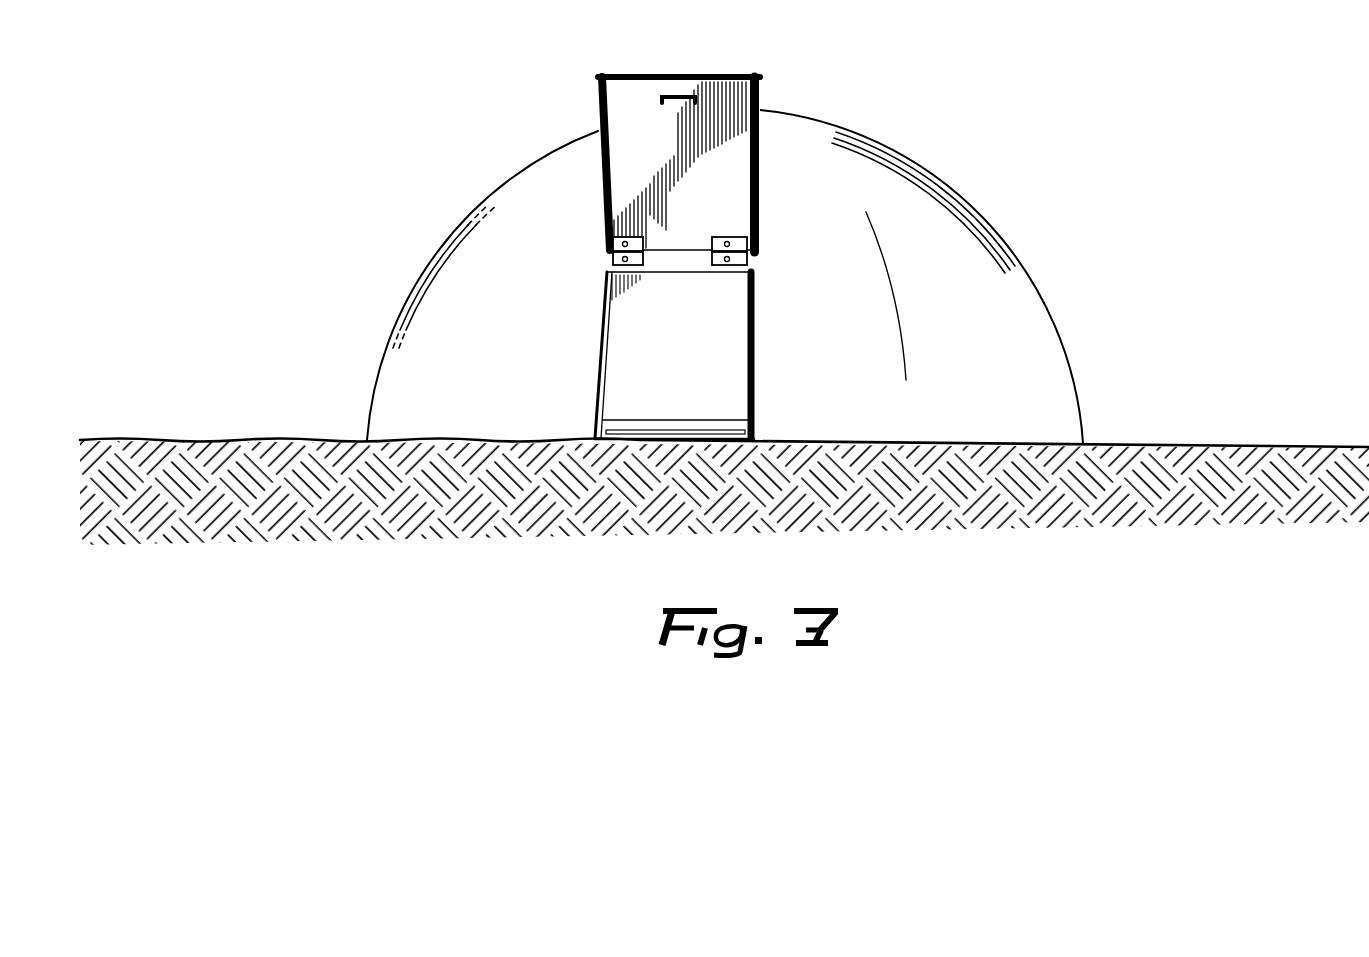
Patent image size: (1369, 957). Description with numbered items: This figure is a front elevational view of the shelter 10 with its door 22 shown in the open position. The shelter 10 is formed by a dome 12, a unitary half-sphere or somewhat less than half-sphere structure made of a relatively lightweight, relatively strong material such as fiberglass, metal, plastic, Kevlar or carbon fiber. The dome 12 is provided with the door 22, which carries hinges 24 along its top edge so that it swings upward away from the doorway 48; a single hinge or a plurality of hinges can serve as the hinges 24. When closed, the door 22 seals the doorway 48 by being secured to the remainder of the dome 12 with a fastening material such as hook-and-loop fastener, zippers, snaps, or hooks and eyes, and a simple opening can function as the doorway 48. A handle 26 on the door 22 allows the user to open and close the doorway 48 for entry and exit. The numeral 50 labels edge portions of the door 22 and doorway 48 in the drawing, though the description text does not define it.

The shelter 10 is at (448, 137).
The dome 12 is at (553, 158).
The door 22 is at (695, 192).
The hinges 24 is at (752, 273).
The handle 26 is at (662, 95).
The doorway 48 is at (622, 328).
The side wall 50 is at (758, 173).